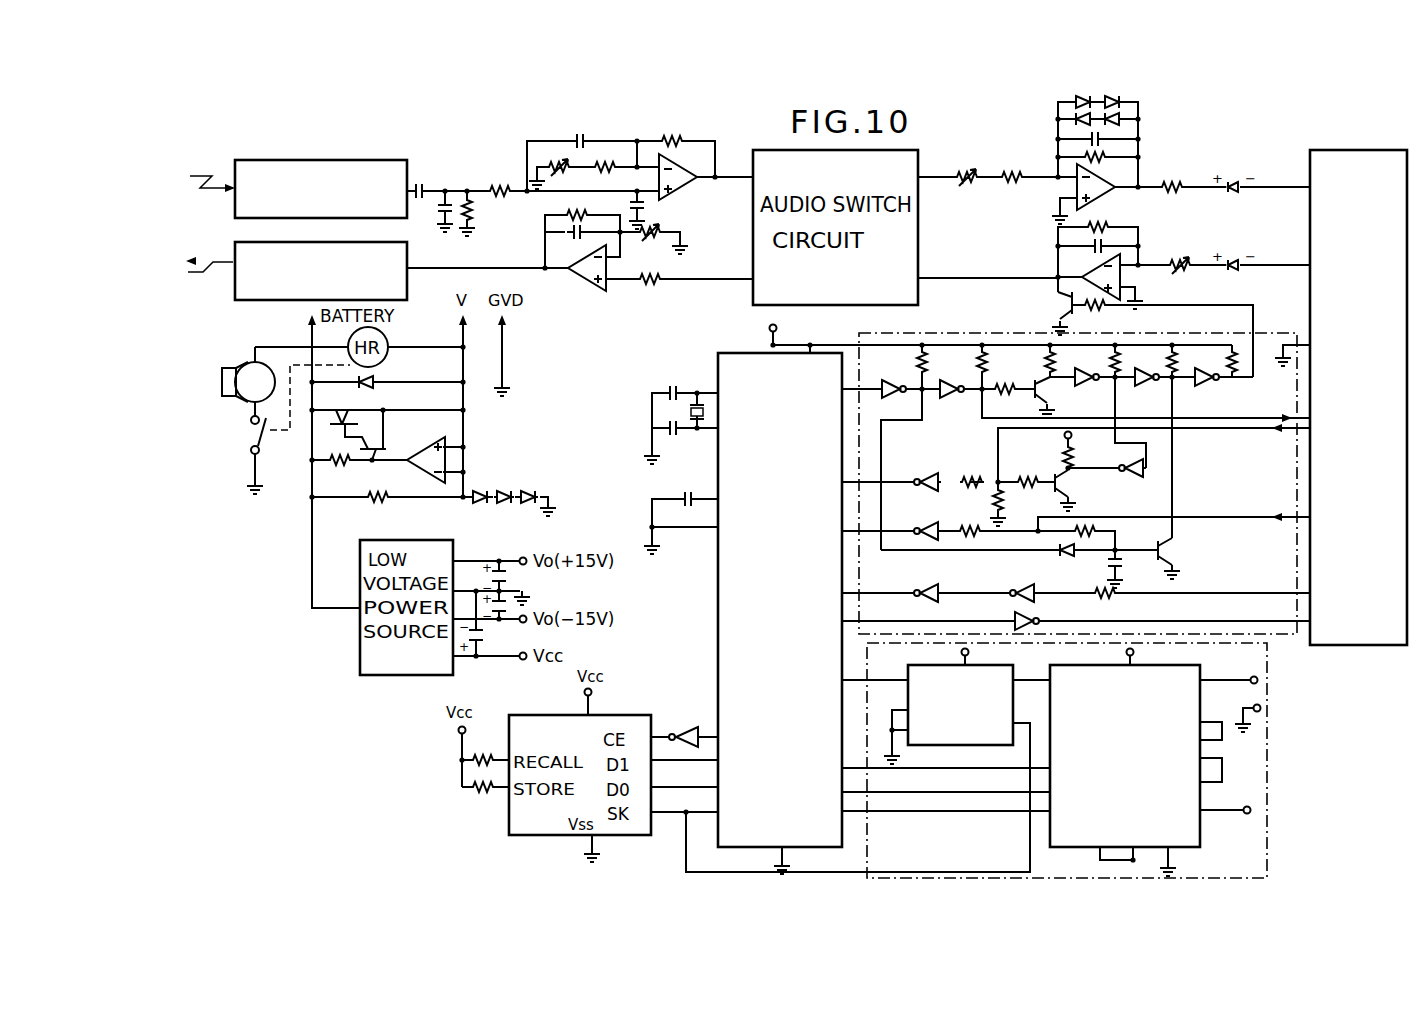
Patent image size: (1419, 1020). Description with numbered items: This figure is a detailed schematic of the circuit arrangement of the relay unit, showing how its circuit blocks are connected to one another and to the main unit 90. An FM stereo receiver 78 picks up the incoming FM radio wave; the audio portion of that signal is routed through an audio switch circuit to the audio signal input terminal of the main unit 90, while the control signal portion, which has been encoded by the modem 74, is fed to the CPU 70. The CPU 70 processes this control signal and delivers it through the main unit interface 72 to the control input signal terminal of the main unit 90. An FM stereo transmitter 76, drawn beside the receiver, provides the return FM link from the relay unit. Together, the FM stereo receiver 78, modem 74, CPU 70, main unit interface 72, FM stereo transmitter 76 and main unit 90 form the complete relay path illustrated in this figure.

The CPU 70 is at (716, 353).
The main unit interface 72 is at (861, 333).
The modem 74 is at (1267, 650).
The FM stereo transmitter 76 is at (409, 244).
The FM stereo receiver 78 is at (405, 160).
The main unit 90 is at (1386, 150).